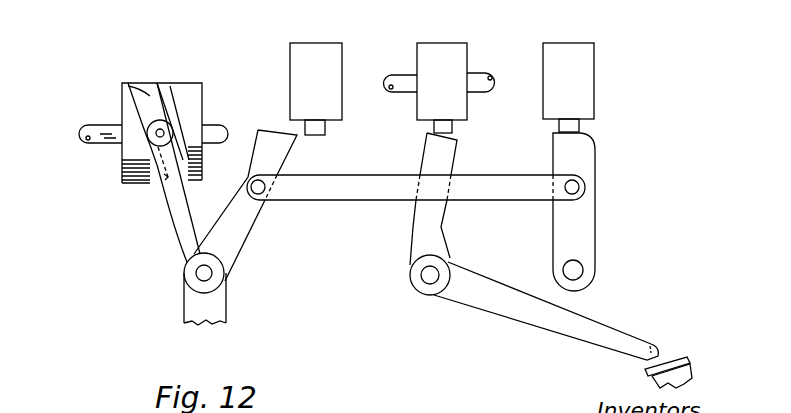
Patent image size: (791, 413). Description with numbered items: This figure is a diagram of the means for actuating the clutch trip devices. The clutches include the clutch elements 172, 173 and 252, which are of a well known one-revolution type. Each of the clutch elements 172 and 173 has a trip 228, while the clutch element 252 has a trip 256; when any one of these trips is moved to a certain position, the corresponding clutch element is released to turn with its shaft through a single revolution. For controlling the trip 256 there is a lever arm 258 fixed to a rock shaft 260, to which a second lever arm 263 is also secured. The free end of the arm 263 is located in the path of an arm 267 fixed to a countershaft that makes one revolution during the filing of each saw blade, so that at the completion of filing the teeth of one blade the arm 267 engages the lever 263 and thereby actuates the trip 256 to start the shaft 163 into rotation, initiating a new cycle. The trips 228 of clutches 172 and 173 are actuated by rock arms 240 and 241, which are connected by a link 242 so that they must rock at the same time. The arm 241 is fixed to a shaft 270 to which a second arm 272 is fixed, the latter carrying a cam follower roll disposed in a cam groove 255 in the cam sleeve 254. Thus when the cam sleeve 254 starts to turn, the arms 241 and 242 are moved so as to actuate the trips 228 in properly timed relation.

The shaft 163 is at (477, 77).
The clutch element 172 is at (588, 77).
The clutch element 173 is at (293, 80).
The trip 228 is at (325, 127).
The rock arm 240 is at (580, 218).
The rock arm 241 is at (230, 257).
The link 242 is at (377, 193).
The clutch element 252 is at (393, 73).
The cam sleeve 254 is at (170, 88).
The cam groove 255 is at (142, 92).
The trip 256 is at (437, 125).
The lever arm 258 is at (443, 162).
The rock shaft 260 is at (430, 275).
The lever arm 263 is at (103, 143).
The arm 267 is at (690, 370).
The shaft 270 is at (203, 273).
The arm 272 is at (178, 232).